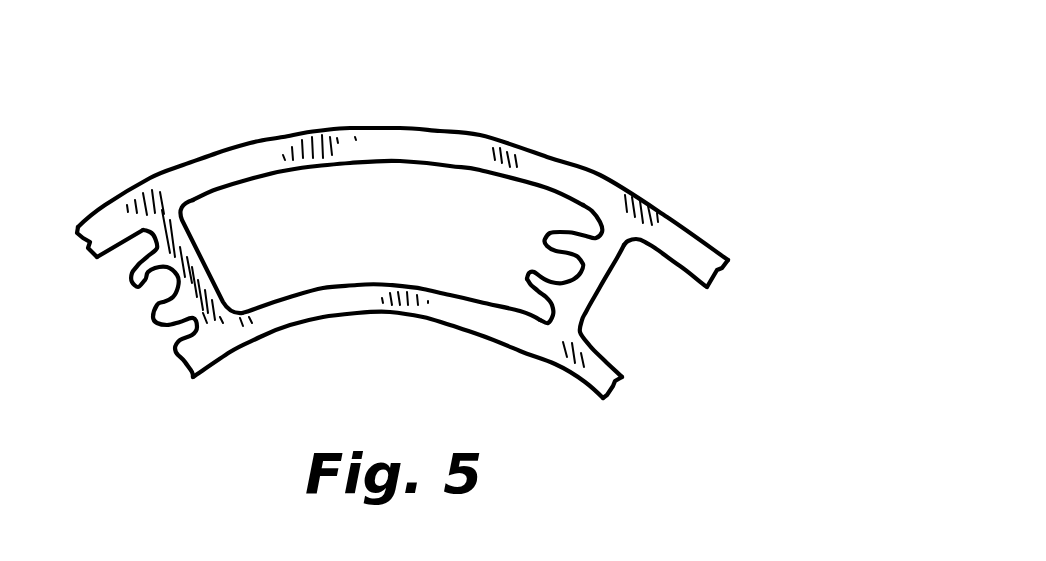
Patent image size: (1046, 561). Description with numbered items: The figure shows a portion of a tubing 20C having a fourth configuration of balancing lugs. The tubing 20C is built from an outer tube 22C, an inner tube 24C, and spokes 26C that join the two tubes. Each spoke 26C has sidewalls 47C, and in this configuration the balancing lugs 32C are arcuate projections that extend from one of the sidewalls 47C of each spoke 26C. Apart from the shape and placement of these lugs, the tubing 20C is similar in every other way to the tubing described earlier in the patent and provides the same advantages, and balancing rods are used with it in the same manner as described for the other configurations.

The tubing 20C is at (697, 80).
The outer tube 22C is at (416, 138).
The inner tube 24C is at (452, 320).
The spoke 26C is at (590, 309).
The balancing lug 32C is at (508, 282).
The sidewall 47C is at (583, 212).